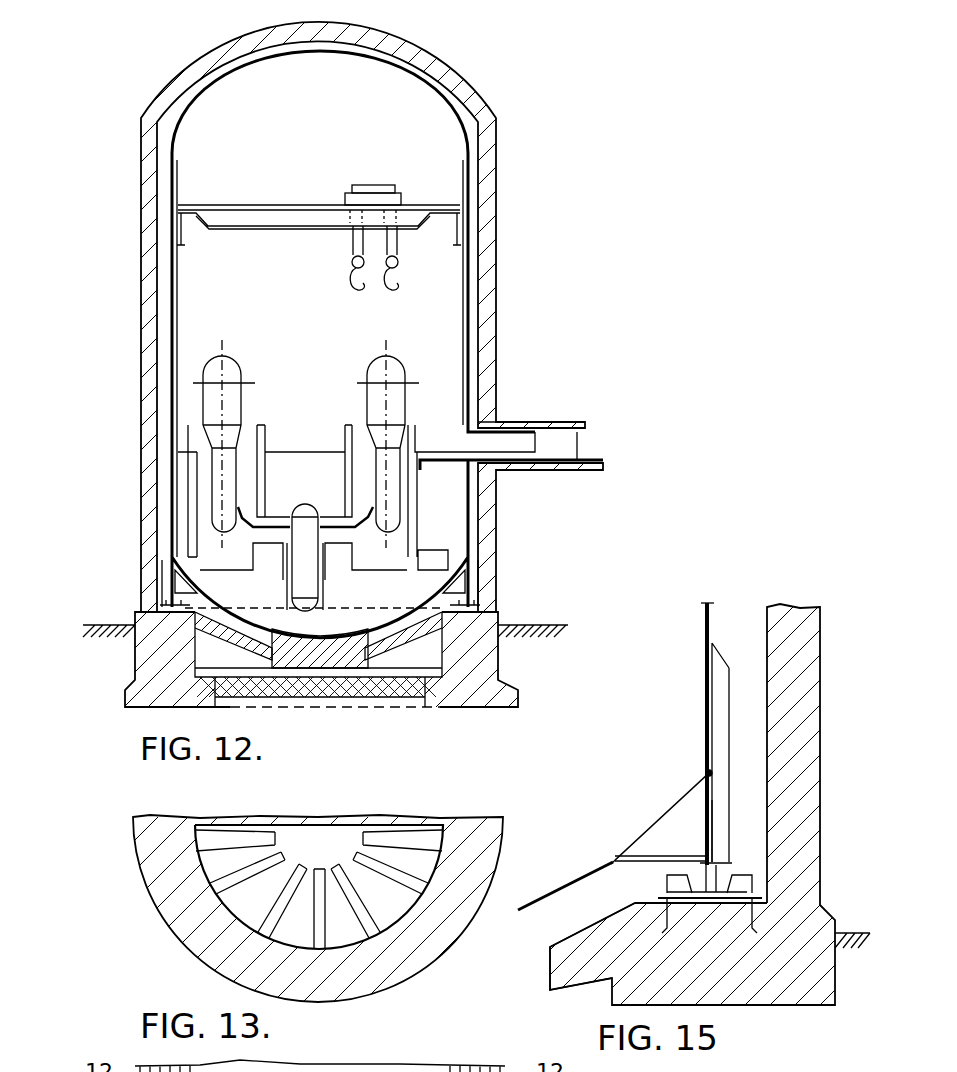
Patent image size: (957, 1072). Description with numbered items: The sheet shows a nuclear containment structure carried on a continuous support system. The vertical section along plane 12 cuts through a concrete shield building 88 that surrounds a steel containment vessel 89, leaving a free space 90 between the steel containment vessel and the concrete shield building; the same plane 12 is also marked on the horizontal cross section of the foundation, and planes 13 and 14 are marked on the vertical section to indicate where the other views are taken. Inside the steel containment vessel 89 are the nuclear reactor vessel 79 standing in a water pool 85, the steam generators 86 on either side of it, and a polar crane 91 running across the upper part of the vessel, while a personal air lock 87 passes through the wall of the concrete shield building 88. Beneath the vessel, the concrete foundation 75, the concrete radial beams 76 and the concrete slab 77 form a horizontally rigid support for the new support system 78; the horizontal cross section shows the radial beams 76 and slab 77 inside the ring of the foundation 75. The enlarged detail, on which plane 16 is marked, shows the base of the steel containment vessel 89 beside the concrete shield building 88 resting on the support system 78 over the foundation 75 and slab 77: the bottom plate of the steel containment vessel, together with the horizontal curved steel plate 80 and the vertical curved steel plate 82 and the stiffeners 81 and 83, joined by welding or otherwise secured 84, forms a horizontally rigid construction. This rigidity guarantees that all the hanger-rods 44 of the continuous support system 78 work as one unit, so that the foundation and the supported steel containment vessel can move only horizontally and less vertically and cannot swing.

In FIG. 13, the section plane 12- 12 is at (120, 831).
In FIG. 12, the section plane 13- 13 is at (68, 682).
In FIG. 12, the section plane 14- 14 is at (68, 632).
In FIG. 15, the section plane 16- 16 is at (580, 865).
In FIG. 15, the hanger-rods 44 is at (727, 870).
In FIG. 12, the concrete foundation 75 is at (443, 655).
In FIG. 13, the concrete foundation 75 is at (458, 933).
In FIG. 15, the concrete foundation 75 is at (830, 977).
In FIG. 12, the concrete radial beams 76 is at (412, 630).
In FIG. 13, the concrete radial beams 76 is at (410, 884).
In FIG. 12, the concrete slab 77 is at (252, 646).
In FIG. 13, the concrete slab 77 is at (344, 917).
In FIG. 15, the concrete slab 77 is at (552, 967).
In FIG. 12, the support system 78 is at (186, 604).
In FIG. 15, the support system 78 is at (747, 882).
In FIG. 12, the nuclear reactor vessel 79 is at (320, 577).
In FIG. 15, the horizontal curved steel plate 80 is at (655, 870).
In FIG. 15, the stiffeners 81 is at (684, 822).
In FIG. 15, the vertical curved steel plate 82 is at (712, 815).
In FIG. 15, the stiffeners 83 is at (730, 750).
In FIG. 15, the welding 84 is at (712, 710).
In FIG. 12, the water pool 85 is at (342, 485).
In FIG. 12, the steam generators 86 is at (367, 402).
In FIG. 12, the personal air lock 87 is at (486, 438).
In FIG. 12, the concrete shield building 88 is at (497, 352).
In FIG. 15, the concrete shield building 88 is at (790, 606).
In FIG. 12, the steel containment vessel 89 is at (463, 327).
In FIG. 15, the steel containment vessel 89 is at (707, 773).
In FIG. 12, the free space 90 is at (466, 297).
In FIG. 12, the polar crane 91 is at (298, 227).